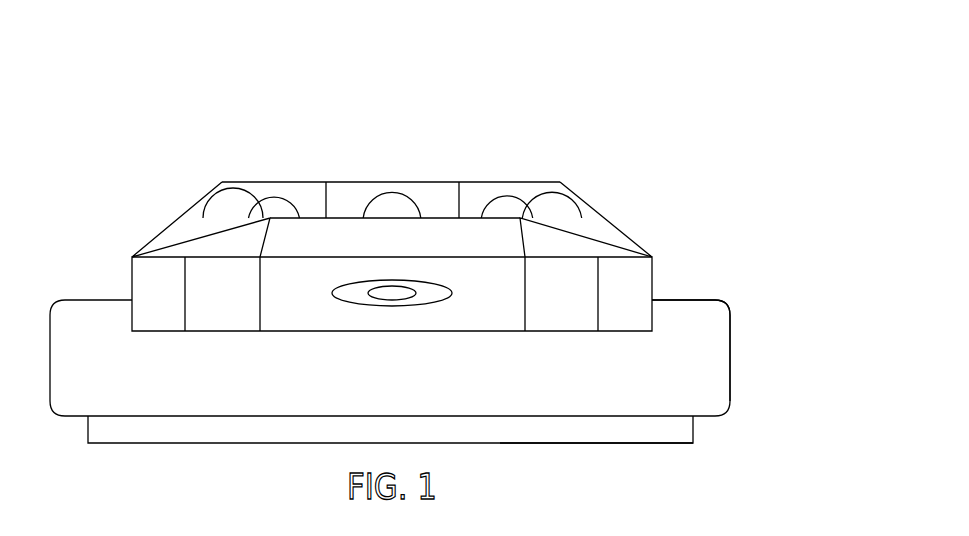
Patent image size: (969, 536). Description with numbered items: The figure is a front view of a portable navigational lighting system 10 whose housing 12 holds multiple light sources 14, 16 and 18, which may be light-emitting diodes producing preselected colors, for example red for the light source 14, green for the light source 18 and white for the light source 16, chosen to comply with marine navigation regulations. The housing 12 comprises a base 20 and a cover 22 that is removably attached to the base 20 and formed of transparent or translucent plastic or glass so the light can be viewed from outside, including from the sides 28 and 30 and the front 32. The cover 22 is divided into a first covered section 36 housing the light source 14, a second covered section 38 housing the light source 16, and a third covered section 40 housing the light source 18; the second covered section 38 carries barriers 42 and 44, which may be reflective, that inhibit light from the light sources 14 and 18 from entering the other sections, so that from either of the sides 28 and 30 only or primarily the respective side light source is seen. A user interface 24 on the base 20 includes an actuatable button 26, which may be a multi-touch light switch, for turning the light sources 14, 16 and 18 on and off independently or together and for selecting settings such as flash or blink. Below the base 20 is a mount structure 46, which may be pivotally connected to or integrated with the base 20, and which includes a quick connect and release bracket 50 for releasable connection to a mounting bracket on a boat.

The portable navigational lighting system 10 is at (592, 92).
The housing 12 is at (732, 297).
The light source 14 is at (198, 222).
The light source 16 is at (425, 181).
The light source 18 is at (586, 222).
The base 20 is at (720, 345).
The cover 22 is at (357, 182).
The user interface 24 is at (307, 334).
The actuatable button 26 is at (417, 297).
The side 28 is at (183, 187).
The side 30 is at (610, 195).
The front 32 is at (302, 399).
The first covered section 36 is at (257, 182).
The second covered section 38 is at (445, 182).
The third covered section 40 is at (532, 182).
The barrier 42 is at (323, 183).
The barrier 44 is at (463, 183).
The mount structure 46 is at (638, 445).
The quick connect and release bracket 50 is at (563, 445).